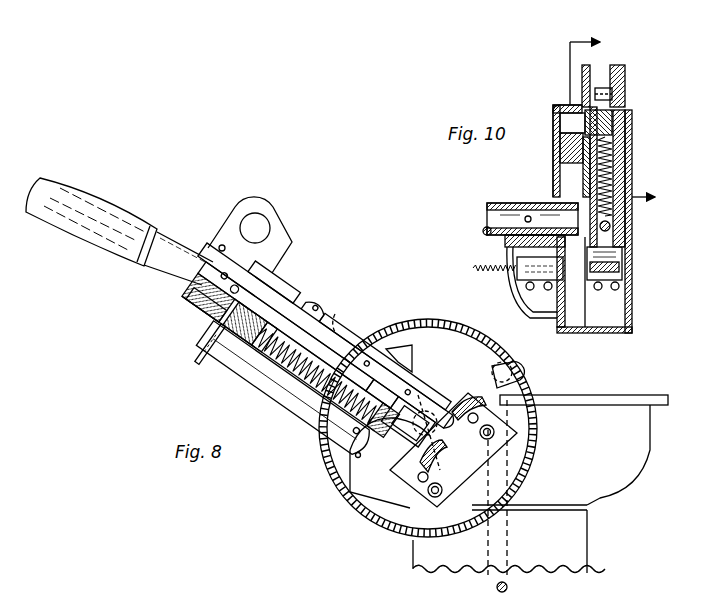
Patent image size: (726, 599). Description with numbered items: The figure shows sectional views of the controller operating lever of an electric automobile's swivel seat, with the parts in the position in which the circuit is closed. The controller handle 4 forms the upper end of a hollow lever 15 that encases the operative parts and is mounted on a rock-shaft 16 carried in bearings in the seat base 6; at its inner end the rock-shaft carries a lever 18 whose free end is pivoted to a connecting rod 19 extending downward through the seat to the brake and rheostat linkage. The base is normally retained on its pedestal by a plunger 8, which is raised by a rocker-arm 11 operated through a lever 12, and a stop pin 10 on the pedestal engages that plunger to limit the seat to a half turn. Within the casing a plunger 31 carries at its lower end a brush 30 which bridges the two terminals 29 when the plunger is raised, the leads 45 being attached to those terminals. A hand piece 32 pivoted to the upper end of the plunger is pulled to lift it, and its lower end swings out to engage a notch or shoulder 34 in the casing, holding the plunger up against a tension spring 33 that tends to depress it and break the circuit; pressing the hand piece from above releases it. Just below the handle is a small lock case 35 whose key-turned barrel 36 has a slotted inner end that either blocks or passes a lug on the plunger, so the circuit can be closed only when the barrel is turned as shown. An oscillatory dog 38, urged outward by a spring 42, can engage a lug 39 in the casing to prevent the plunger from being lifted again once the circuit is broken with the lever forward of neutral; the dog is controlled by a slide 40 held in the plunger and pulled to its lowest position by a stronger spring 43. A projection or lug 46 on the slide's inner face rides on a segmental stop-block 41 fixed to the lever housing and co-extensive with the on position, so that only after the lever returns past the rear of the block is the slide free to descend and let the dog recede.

In FIG. 8, the controller handle 4 is at (78, 242).
In FIG. 8, the seat base 6 is at (640, 396).
In FIG. 10, the seat base 6 is at (520, 313).
In FIG. 8, the plunger 8 is at (578, 555).
In FIG. 8, the pin or lug 10 is at (516, 509).
In FIG. 8, the rocker-arm 11 is at (522, 374).
In FIG. 10, the lever 12 is at (626, 116).
In FIG. 8, the hollow lever 15 is at (240, 345).
In FIG. 10, the hollow lever 15 is at (582, 77).
In FIG. 8, the rock-shaft 16 is at (426, 396).
In FIG. 10, the rock-shaft 16 is at (487, 210).
In FIG. 8, the lever 18 is at (453, 327).
In FIG. 10, the lever 18 is at (505, 243).
In FIG. 8, the connecting rod 19 is at (508, 586).
In FIG. 8, the terminals 29 is at (462, 392).
In FIG. 8, the brush 30 is at (437, 400).
In FIG. 10, the brush 30 is at (622, 258).
In FIG. 8, the plunger 31 is at (386, 448).
In FIG. 10, the plunger 31 is at (614, 72).
In FIG. 8, the hand piece 32 is at (278, 230).
In FIG. 8, the tension spring 33 is at (322, 392).
In FIG. 8, the notch or shoulder 34 is at (288, 280).
In FIG. 8, the lock case 35 is at (228, 322).
In FIG. 8, the barrel 36 is at (213, 295).
In FIG. 8, the oscillatory dog 38 is at (318, 365).
In FIG. 8, the lug 39 is at (302, 352).
In FIG. 10, the slide 40 is at (632, 130).
In FIG. 8, the segmental stop-block 41 is at (391, 350).
In FIG. 10, the segmental stop-block 41 is at (573, 153).
In FIG. 8, the spring 42 is at (320, 312).
In FIG. 10, the spring 42 is at (612, 108).
In FIG. 10, the spring 43 is at (613, 165).
In FIG. 10, the leads 45 is at (522, 279).
In FIG. 8, the projection or lug 46 is at (382, 322).
In FIG. 10, the projection or lug 46 is at (582, 120).